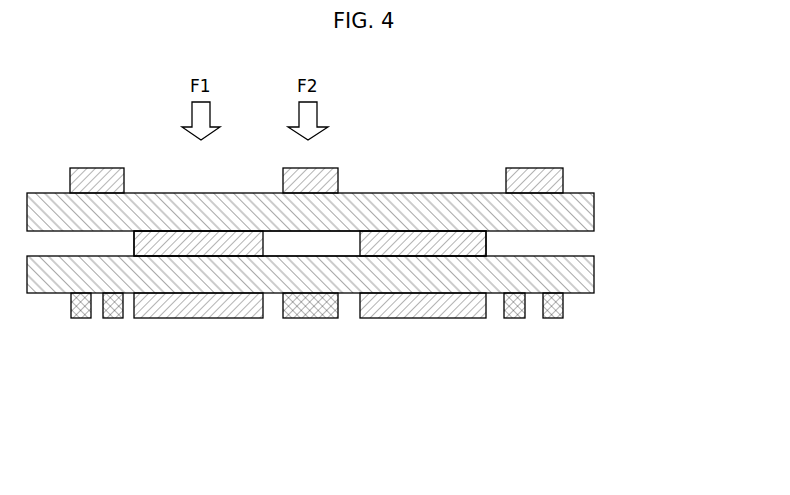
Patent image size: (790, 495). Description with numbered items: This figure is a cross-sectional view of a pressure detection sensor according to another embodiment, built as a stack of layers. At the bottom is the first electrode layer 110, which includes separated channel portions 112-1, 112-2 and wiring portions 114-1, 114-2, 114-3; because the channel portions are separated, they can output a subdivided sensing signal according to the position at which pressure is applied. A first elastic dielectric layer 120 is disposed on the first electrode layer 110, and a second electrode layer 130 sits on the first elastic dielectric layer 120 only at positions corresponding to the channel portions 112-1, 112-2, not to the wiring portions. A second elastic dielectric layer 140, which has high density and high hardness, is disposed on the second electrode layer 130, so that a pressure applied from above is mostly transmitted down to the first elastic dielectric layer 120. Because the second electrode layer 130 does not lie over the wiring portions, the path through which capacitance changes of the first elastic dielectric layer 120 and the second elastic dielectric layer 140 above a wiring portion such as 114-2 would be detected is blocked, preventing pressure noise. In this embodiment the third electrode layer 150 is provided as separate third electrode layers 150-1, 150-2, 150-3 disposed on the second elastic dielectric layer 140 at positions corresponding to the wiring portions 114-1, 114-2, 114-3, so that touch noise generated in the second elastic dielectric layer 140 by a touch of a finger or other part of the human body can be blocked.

The first electrode layer 110 is at (378, 329).
The channel portion 112-1 is at (186, 320).
The channel portion 112-2 is at (420, 320).
The wiring portion 114-1 is at (108, 320).
The wiring portion 114-2 is at (313, 320).
The wiring portion 114-3 is at (544, 320).
The first elastic dielectric layer 120 is at (609, 273).
The second electrode layer 130 is at (599, 241).
The second elastic dielectric layer 140 is at (604, 205).
The third electrode layer 150 is at (362, 162).
The third electrode layer 150-1 is at (83, 166).
The third electrode layer 150-2 is at (339, 174).
The third electrode layer 150-3 is at (529, 165).